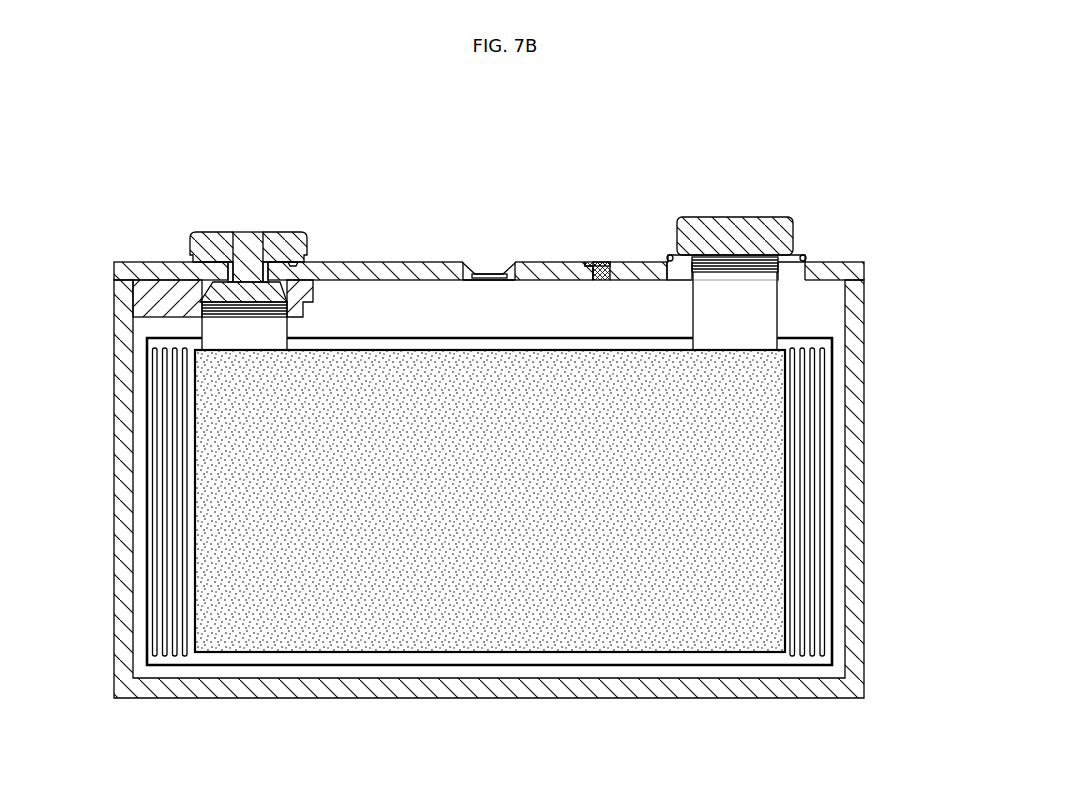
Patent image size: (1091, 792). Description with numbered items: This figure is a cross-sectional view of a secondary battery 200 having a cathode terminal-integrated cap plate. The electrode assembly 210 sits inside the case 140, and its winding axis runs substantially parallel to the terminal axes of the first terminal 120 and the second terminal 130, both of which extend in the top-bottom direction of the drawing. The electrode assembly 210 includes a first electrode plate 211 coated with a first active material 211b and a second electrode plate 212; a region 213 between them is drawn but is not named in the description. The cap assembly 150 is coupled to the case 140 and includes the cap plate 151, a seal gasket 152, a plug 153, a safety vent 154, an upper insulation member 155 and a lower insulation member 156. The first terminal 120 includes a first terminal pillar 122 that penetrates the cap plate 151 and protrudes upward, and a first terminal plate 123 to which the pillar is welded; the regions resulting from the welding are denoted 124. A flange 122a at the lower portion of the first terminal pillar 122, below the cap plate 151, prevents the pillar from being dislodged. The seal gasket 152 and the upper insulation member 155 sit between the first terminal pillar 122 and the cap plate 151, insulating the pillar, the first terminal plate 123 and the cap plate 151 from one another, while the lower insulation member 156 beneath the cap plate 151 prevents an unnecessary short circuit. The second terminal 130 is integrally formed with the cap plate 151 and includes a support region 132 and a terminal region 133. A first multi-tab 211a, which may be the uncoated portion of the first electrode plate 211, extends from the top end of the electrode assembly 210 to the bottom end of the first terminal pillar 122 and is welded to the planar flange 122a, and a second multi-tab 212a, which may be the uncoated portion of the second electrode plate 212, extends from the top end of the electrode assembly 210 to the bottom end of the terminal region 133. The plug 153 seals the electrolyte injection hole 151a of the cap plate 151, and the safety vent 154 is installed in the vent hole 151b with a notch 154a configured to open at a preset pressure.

The secondary battery 200 is at (897, 94).
The first terminal 120 is at (193, 152).
The first terminal pillar 122 is at (213, 242).
The flange 122a is at (313, 292).
The first terminal plate 123 is at (293, 240).
The welding regions 124 is at (250, 236).
The second terminal 130 is at (765, 152).
The support region 132 is at (668, 255).
The terminal region 133 is at (747, 217).
The case 140 is at (858, 430).
The cap assembly 150 is at (489, 260).
The cap plate 151 is at (421, 262).
The electrolyte injection hole 151a is at (594, 281).
The vent hole 151b is at (469, 281).
The seal gasket 152 is at (272, 267).
The plug 153 is at (595, 262).
The safety vent 154 is at (507, 263).
The notch 154a is at (481, 270).
The upper insulation member 155 is at (313, 261).
The lower insulation member 156 is at (143, 295).
The electrode assembly 210 is at (496, 508).
The first electrode plate 211 is at (188, 370).
The first multi-tab 211a is at (243, 327).
The first active material 211b is at (376, 632).
The second electrode plate 212 is at (802, 368).
The second multi-tab 212a is at (735, 301).
The separator 213 is at (450, 660).